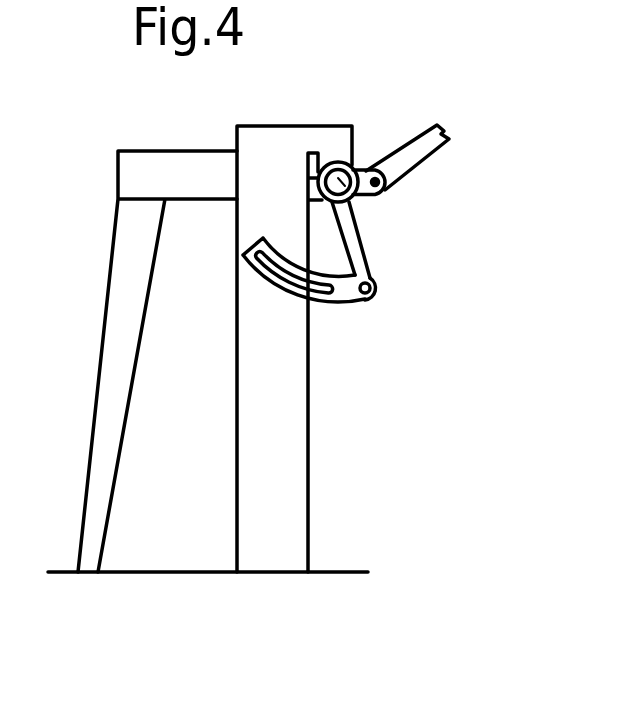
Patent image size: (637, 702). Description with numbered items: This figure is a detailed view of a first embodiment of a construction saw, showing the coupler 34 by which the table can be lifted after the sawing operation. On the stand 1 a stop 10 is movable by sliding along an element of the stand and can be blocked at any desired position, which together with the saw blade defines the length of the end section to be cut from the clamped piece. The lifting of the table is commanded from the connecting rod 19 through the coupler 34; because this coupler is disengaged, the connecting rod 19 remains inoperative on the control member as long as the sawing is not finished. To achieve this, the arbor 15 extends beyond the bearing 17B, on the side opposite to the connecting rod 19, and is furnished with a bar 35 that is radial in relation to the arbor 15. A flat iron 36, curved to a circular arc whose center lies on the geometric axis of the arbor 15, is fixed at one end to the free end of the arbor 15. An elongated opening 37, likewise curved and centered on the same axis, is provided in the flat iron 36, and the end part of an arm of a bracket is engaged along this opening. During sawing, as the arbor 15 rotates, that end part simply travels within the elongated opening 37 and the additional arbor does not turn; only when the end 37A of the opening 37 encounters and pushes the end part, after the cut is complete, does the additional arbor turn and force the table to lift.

The stand 1 is at (93, 328).
The stop 10 is at (303, 137).
The arbor 15 is at (359, 197).
The bearing 17B is at (362, 161).
The connecting rod 19 is at (418, 152).
The coupler 34 is at (324, 318).
The bar 35 is at (352, 249).
The flat iron 36 is at (362, 307).
The elongated opening 37 is at (262, 312).
The end of the opening 37A is at (326, 302).